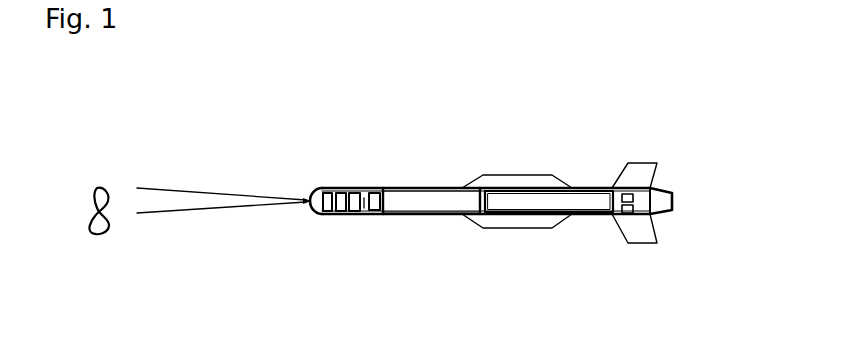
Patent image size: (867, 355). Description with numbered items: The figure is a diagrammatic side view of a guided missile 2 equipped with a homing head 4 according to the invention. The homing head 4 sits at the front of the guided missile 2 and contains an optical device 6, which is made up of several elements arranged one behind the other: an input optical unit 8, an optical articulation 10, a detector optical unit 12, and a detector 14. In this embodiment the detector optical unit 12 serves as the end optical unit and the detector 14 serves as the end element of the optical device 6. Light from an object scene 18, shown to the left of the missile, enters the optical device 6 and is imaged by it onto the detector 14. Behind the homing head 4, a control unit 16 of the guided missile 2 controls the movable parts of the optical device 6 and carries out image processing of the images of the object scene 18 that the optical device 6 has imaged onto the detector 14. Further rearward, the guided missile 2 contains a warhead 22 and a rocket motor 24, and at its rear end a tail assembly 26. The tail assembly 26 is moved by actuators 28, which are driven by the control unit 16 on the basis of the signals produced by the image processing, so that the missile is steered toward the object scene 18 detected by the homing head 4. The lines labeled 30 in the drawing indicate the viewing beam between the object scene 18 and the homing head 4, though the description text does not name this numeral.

The guided missile 2 is at (508, 167).
The homing head 4 is at (301, 186).
The optical device 6 is at (310, 204).
The input optical unit 8 is at (325, 190).
The optical articulation 10 is at (341, 192).
The detector optical unit 12 is at (352, 211).
The detector 14 is at (365, 210).
The control unit 16 is at (377, 190).
The object scene 18 is at (101, 190).
The warhead 22 is at (455, 204).
The rocket motor 24 is at (590, 211).
The tail assembly 26 is at (636, 183).
The actuators 28 is at (622, 194).
The laser beam 30 is at (171, 200).